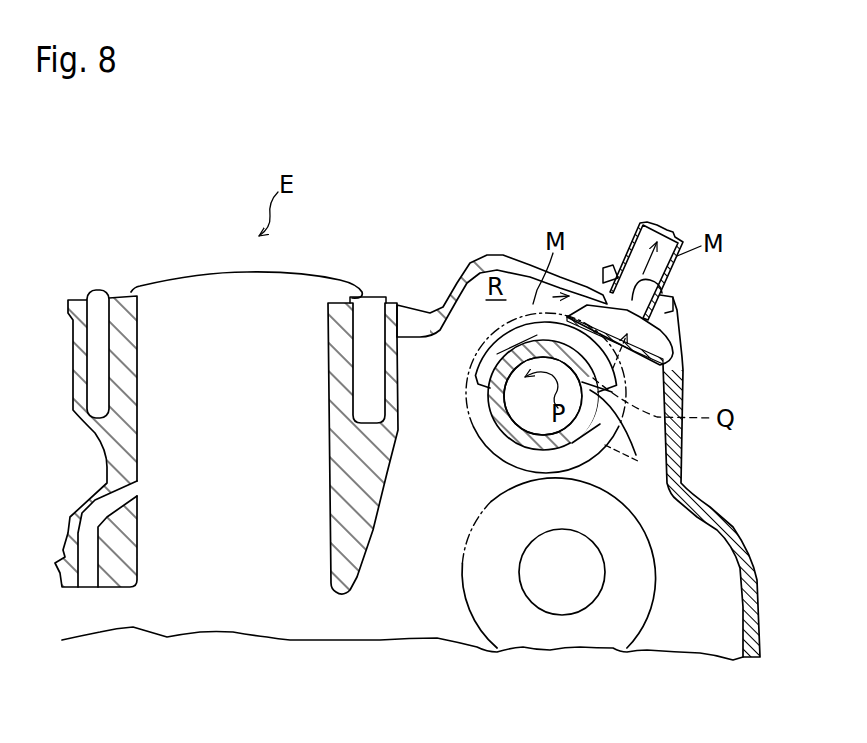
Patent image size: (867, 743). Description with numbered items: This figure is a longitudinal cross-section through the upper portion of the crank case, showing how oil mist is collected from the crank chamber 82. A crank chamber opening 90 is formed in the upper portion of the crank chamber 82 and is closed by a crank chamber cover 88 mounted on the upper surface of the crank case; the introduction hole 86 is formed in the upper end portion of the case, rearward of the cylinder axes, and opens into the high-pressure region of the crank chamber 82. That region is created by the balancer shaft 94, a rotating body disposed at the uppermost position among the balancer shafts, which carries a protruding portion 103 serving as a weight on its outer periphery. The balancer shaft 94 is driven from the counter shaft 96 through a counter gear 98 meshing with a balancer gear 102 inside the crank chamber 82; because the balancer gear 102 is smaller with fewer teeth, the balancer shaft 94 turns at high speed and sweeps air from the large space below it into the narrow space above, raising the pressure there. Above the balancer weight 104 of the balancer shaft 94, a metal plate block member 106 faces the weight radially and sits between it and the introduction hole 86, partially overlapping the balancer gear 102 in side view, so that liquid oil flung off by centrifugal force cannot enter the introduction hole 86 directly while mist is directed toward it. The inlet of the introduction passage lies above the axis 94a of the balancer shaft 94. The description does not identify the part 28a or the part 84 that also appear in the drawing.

The cylinder bore of cylinder 28 28a is at (100, 458).
The crank chamber 82 is at (422, 567).
The intake pipe forming passage 95 84 is at (629, 252).
The introduction hole 86 is at (660, 285).
The crank chamber cover 88 is at (523, 262).
The crank chamber opening 90 is at (683, 373).
The balancer shaft 94 is at (518, 413).
The axis 94a is at (540, 397).
The counter shaft 96 is at (557, 600).
The counter gear 98 is at (473, 623).
The balancer gear 102 is at (640, 462).
The protruding portion 103 is at (502, 338).
The balancer weight 104 is at (482, 375).
The block member 106 is at (662, 348).